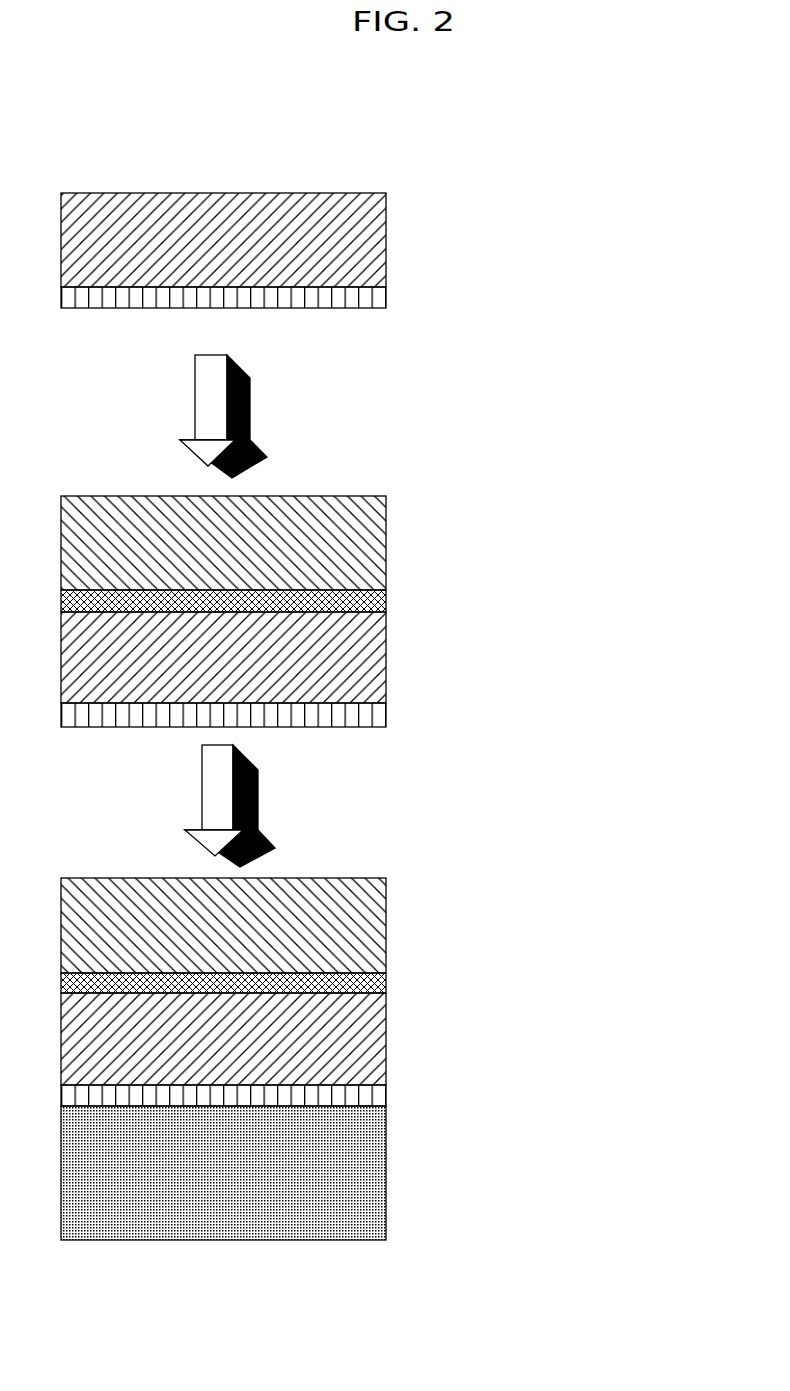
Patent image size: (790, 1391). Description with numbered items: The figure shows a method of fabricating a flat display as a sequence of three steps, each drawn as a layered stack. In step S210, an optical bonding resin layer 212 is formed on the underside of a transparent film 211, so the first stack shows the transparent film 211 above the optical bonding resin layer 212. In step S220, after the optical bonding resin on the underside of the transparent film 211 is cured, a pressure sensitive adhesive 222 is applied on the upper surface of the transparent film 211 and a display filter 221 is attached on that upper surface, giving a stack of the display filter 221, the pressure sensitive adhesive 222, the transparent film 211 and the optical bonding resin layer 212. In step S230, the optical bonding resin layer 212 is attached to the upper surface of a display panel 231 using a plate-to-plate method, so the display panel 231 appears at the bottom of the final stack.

The step of forming an optical bonding resin layer S210 is at (392, 170).
The step of attaching a display filter S220 is at (402, 478).
The step of attaching the optical bonding resin layer and the display panel S230 is at (402, 859).
The transparent film 211 is at (387, 239).
The optical bonding resin layer 212 is at (387, 292).
The display filter 221 is at (385, 540).
The pressure sensitive adhesive 222 is at (385, 593).
The display panel 231 is at (370, 1192).